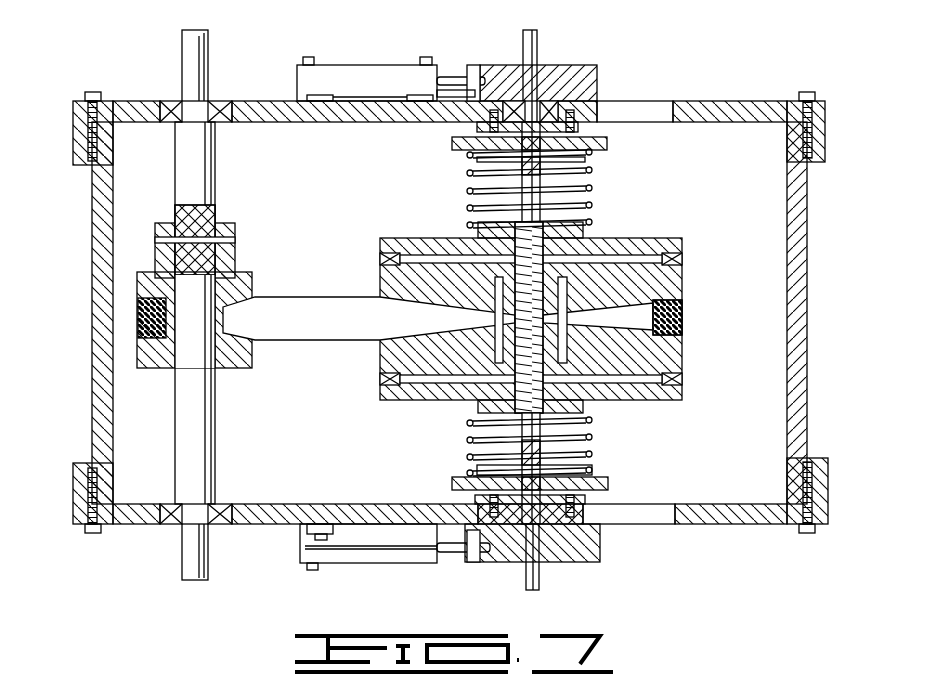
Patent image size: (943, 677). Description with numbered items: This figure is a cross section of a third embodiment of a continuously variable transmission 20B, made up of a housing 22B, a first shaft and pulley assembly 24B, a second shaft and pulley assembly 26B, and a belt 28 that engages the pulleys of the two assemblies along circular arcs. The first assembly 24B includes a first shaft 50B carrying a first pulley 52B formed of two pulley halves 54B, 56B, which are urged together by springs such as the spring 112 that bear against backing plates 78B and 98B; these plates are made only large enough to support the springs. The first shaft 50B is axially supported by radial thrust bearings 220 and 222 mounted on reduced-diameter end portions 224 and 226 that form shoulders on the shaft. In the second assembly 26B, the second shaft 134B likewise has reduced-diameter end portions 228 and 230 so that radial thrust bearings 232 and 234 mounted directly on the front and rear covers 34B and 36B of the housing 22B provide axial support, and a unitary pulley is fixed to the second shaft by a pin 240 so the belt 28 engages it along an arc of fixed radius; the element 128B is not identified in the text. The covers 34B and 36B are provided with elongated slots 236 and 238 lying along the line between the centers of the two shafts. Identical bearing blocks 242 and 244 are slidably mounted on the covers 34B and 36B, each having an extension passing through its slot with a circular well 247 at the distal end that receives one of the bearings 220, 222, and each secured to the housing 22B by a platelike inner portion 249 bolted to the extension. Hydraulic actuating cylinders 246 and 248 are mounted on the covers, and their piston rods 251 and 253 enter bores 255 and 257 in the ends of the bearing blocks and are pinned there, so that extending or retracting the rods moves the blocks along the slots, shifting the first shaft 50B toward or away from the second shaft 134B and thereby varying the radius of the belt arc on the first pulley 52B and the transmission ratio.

The continuously variable transmission 20B is at (678, 40).
The housing 22B is at (757, 98).
The first shaft and pulley assembly 24B is at (652, 226).
The second shaft and pulley assembly 26B is at (172, 160).
The belt 28 is at (680, 321).
The front cover 34B is at (264, 516).
The rear cover 36B is at (250, 104).
The first shaft 50B is at (586, 186).
The first pulley 52B is at (668, 274).
The pulley half 54B is at (668, 355).
The pulley half 56B is at (684, 285).
The backing plate 78B is at (592, 138).
The backing plate 98B is at (606, 482).
The spring 112 is at (592, 440).
The tube 128B is at (185, 398).
The second shaft 134B is at (136, 357).
The radial thrust bearing 220 is at (545, 524).
The radial thrust bearing 222 is at (545, 82).
The end portion 224 is at (540, 586).
The end portion 226 is at (535, 30).
The end portion 228 is at (188, 563).
The end portion 230 is at (196, 44).
The radial thrust bearing 232 is at (177, 522).
The radial thrust bearing 234 is at (170, 106).
The elongated slot 236 is at (662, 515).
The elongated slot 238 is at (640, 108).
The pin 240 is at (160, 240).
The bearing block 242 is at (511, 553).
The bearing block 244 is at (500, 72).
The hydraulic actuating cylinder 246 is at (333, 547).
The circular well 247 is at (484, 516).
The hydraulic actuating cylinder 248 is at (350, 75).
The inner portion 249 is at (578, 498).
The piston rod 251 is at (467, 552).
The piston rod 253 is at (452, 80).
The bore 255 is at (453, 552).
The bore 257 is at (470, 70).